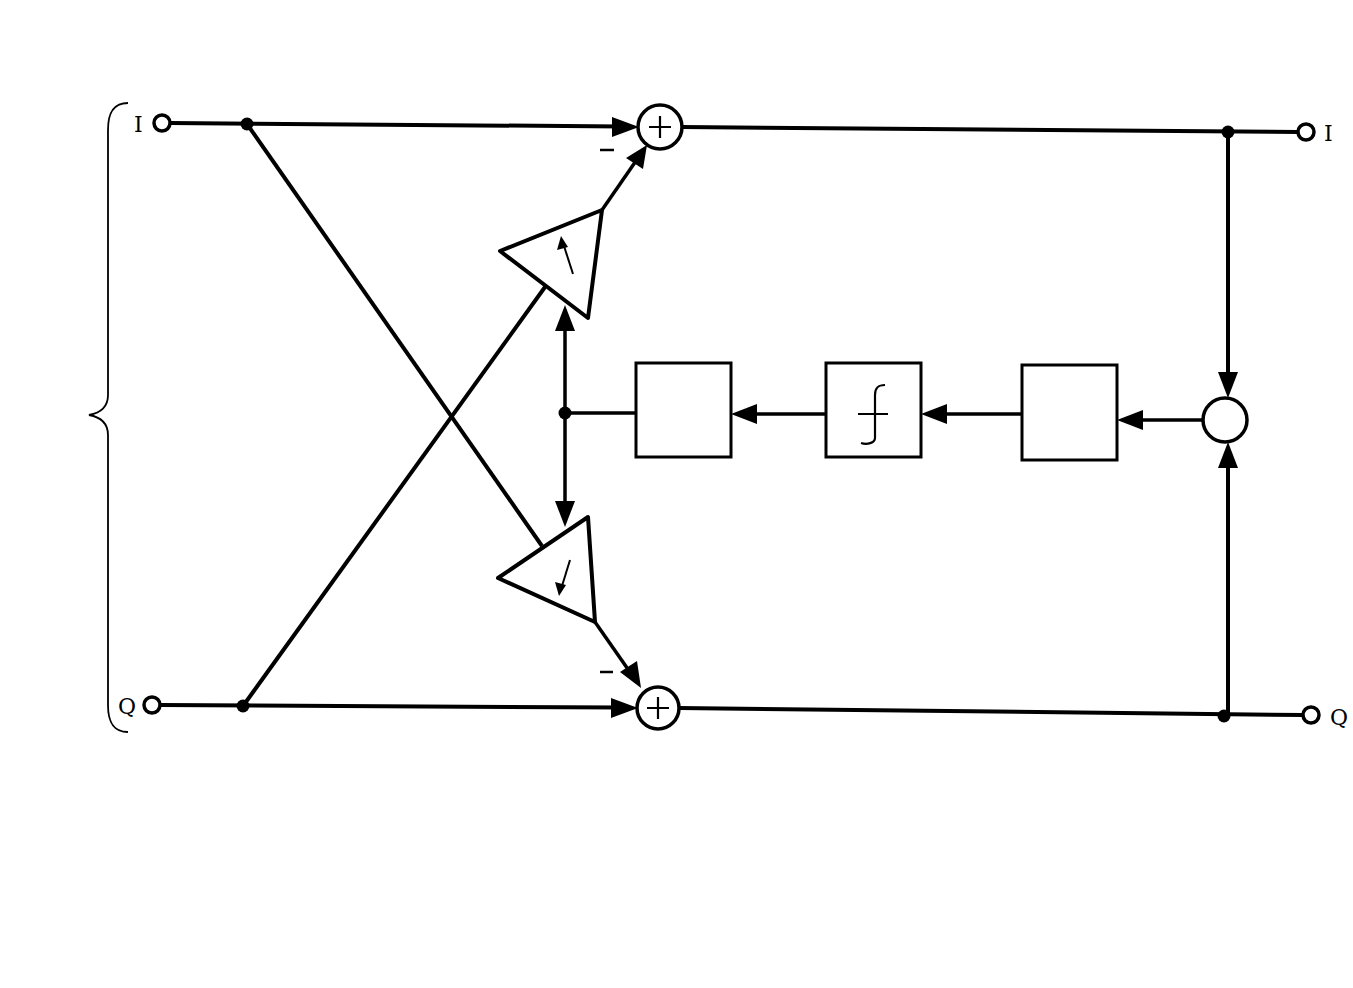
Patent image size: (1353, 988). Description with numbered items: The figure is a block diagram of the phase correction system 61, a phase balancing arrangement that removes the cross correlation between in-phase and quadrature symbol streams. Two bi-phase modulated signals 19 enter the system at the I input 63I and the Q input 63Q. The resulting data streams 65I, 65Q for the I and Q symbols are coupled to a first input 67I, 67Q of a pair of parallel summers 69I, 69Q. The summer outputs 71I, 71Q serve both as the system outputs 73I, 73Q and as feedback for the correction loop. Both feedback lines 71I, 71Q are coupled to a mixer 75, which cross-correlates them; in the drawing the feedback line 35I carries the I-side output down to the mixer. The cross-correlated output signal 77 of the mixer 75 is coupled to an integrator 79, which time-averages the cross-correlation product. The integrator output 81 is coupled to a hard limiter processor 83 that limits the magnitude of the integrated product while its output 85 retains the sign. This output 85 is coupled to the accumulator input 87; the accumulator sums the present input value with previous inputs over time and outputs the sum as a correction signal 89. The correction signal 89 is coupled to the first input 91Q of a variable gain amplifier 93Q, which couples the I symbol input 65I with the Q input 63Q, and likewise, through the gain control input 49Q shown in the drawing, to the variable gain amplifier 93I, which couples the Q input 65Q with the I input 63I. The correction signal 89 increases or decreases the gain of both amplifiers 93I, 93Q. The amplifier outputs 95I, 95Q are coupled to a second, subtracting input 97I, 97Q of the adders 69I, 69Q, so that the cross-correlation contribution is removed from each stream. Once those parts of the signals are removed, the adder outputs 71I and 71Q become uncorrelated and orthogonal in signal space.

The bi-phase modulated signals 19 is at (88, 417).
The phase correction system 61 is at (447, 790).
The I input 63I is at (163, 113).
The Q input 63Q is at (158, 714).
The I data stream 65I is at (368, 118).
The Q data stream 65Q is at (368, 712).
The first input of I summer 67I is at (634, 117).
The first input of Q summer 67Q is at (627, 715).
The I summer 69I is at (676, 110).
The Q summer 69Q is at (666, 729).
The I summer output 71I is at (880, 124).
The Q summer output 71Q is at (856, 713).
The I system output 73I is at (1306, 123).
The Q system output 73Q is at (1311, 724).
The corrected I signal feedback line 35I is at (1118, 222).
The mixer 75 is at (1247, 419).
The cross-correlated output signal 77 is at (1156, 426).
The integrator 79 is at (1052, 365).
The integrated product signal 81 is at (962, 420).
The hard limiter processor 83 is at (857, 363).
The hard limiter processor output 85 is at (772, 420).
The accumulator input 87 is at (663, 363).
The correction signal 89 is at (560, 370).
The first input of variable gain amplifier 93Q 91Q is at (560, 318).
The gain control input of I amplifier 49Q is at (578, 522).
The variable gain amplifier 93Q is at (528, 238).
The variable gain amplifier 93I is at (572, 612).
The amplifier output 95I is at (612, 185).
The amplifier output 95Q is at (618, 652).
The second input of I adder 97I is at (643, 152).
The second input of Q adder 97Q is at (646, 680).